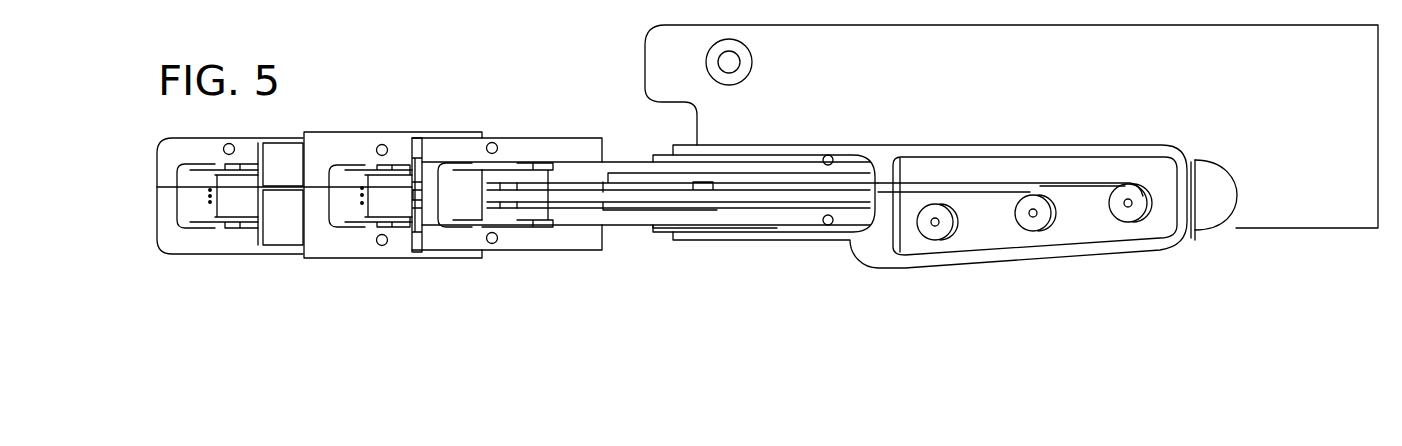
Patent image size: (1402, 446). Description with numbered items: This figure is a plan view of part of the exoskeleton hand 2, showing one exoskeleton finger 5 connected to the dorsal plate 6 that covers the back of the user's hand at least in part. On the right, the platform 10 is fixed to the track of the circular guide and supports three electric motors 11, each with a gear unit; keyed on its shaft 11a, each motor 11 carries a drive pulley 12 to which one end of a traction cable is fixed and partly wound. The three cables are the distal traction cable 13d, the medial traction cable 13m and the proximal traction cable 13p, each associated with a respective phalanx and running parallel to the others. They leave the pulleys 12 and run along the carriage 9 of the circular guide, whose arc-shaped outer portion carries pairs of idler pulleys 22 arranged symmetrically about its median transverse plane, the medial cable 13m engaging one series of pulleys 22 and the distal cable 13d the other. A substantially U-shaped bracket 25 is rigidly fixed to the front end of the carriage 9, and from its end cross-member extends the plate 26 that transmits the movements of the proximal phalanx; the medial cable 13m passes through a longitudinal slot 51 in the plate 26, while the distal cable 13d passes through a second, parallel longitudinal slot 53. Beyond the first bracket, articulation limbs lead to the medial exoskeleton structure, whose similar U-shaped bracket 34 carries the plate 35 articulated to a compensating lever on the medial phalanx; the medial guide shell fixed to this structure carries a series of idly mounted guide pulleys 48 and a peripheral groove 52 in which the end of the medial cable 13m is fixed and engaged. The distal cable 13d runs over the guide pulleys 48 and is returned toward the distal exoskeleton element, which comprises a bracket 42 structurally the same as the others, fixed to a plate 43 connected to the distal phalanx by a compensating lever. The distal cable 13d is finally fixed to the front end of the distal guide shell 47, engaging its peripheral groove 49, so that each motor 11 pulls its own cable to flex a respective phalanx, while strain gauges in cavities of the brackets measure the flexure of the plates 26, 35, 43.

The exoskeleton hand 2 is at (1208, 282).
The exoskeleton finger 5 is at (579, 290).
The dorsal plate 6 is at (1196, 48).
The carriage 9 is at (627, 220).
The platform 10 is at (1110, 250).
The electric motor 11 is at (1215, 223).
The motor shaft 11a is at (1150, 237).
The drive pulley 12 is at (933, 232).
The medial traction cable 13m is at (913, 200).
The proximal traction cable 13p is at (1003, 197).
The distal traction cable 13d is at (1090, 182).
The idler pulleys 22 is at (790, 200).
The bracket 25 is at (507, 150).
The plate 26 is at (485, 208).
The bracket 34 is at (350, 143).
The plate 35 is at (383, 205).
The bracket 42 is at (180, 147).
The plate 43 is at (236, 205).
The distal guide shell 47 is at (278, 162).
The guide pulleys 48 is at (423, 206).
The peripheral groove 49 is at (281, 192).
The longitudinal slot 51 is at (552, 198).
The peripheral groove 52 is at (432, 205).
The longitudinal slot 53 is at (533, 207).